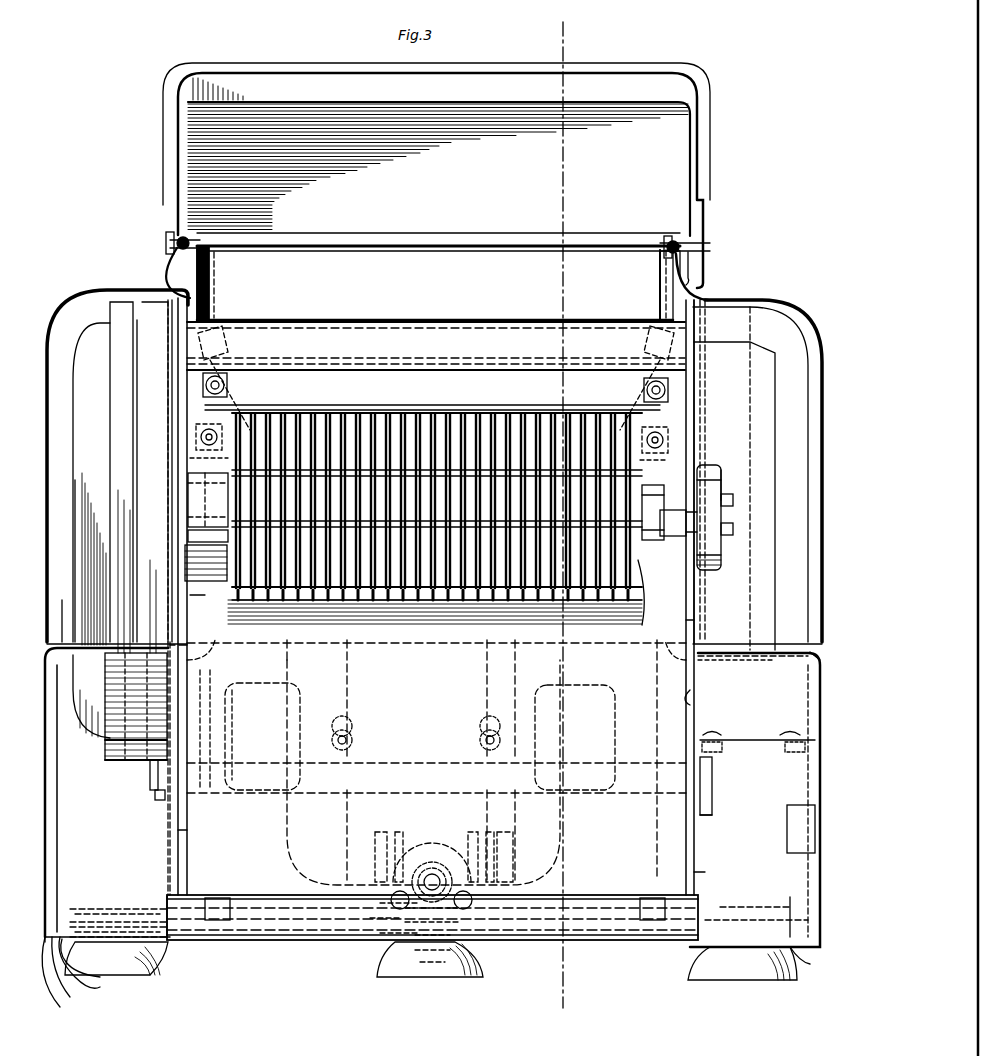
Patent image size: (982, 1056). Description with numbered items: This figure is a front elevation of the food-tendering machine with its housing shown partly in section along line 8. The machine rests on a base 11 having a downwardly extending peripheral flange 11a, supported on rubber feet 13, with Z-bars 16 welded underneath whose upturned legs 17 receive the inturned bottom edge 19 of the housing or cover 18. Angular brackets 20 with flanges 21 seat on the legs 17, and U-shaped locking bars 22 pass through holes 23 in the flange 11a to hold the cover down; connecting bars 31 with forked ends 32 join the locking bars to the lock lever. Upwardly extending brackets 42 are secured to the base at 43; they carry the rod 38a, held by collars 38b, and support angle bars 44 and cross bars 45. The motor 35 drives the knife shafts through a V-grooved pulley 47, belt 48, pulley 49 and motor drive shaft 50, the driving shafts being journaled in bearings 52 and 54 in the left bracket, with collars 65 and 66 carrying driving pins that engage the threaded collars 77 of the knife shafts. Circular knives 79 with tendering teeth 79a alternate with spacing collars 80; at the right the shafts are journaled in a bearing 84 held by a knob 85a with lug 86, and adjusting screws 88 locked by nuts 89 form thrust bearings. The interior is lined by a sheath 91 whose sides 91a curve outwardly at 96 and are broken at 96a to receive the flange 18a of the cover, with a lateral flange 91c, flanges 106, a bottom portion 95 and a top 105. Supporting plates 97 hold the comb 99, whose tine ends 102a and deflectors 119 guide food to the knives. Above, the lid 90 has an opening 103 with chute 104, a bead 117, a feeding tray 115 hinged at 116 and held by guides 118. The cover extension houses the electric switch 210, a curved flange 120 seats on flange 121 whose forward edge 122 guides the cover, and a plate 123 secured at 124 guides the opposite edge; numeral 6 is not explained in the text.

The frame portion 6 is at (63, 600).
The section line 8- 8 is at (547, 998).
The base 11 is at (262, 908).
The peripheral flange 11a is at (75, 942).
The rubber feet 13 is at (172, 958).
The Z-bars 16 is at (90, 970).
The upturned leg 17 is at (85, 992).
The housing or cover 18 is at (80, 790).
The angular flange 18a is at (73, 668).
The inturned bottom edge 19 is at (72, 1002).
The angular brackets 20 is at (48, 880).
The angular flange 21 is at (65, 937).
The locking bars 22 is at (80, 937).
The holes 23 is at (90, 927).
The connecting bars 31 is at (305, 941).
The forked end 32 is at (368, 925).
The motor 35 is at (245, 685).
The horizontally extending rod 38a is at (155, 785).
The collars 38b is at (158, 800).
The brackets 42 is at (192, 605).
The securing point 43 is at (215, 898).
The angle bars 44 is at (200, 437).
The cross bars 45 is at (190, 455).
The V-grooved pulley 47 is at (110, 752).
The belt 48 is at (110, 728).
The pulley 49 is at (95, 303).
The motor drive shaft 50 is at (215, 672).
The bearing 52 is at (188, 536).
The bearing 54 is at (188, 492).
The collar 65 is at (185, 553).
The collar 66 is at (318, 402).
The collars 77 is at (330, 413).
The knives 79 is at (454, 416).
The tendering teeth 79a is at (437, 592).
The spacing collars 80 is at (568, 416).
The bearing 84 is at (715, 565).
The knob 85a is at (705, 520).
The lug 86 is at (722, 556).
The adjusting screws 88 is at (733, 498).
The nuts 89 is at (730, 478).
The lid 90 is at (80, 600).
The sheath 91 is at (265, 630).
The sheath sides 91a is at (190, 300).
The lateral flange portion 91c is at (698, 700).
The bottom portion 95 is at (345, 911).
The outward curve 96 is at (212, 292).
The break 96a is at (200, 648).
The supporting plates 97 is at (222, 380).
The comb 99 is at (418, 370).
The tine ends 102a is at (642, 615).
The opening 103 is at (640, 244).
The chute 104 is at (375, 278).
The sheathing top 105 is at (170, 250).
The flanges 106 is at (178, 833).
The feeding tray 115 is at (698, 150).
The hinge 116 is at (688, 262).
The bead 117 is at (176, 238).
The guides 118 is at (168, 236).
The deflectors 119 is at (232, 354).
The curved inward flange 120 is at (775, 312).
The curved outward flange 121 is at (750, 403).
The forward edge 122 is at (740, 664).
The plate or bracket 123 is at (120, 648).
The securing point 124 is at (158, 648).
The electric switch 210 is at (757, 826).